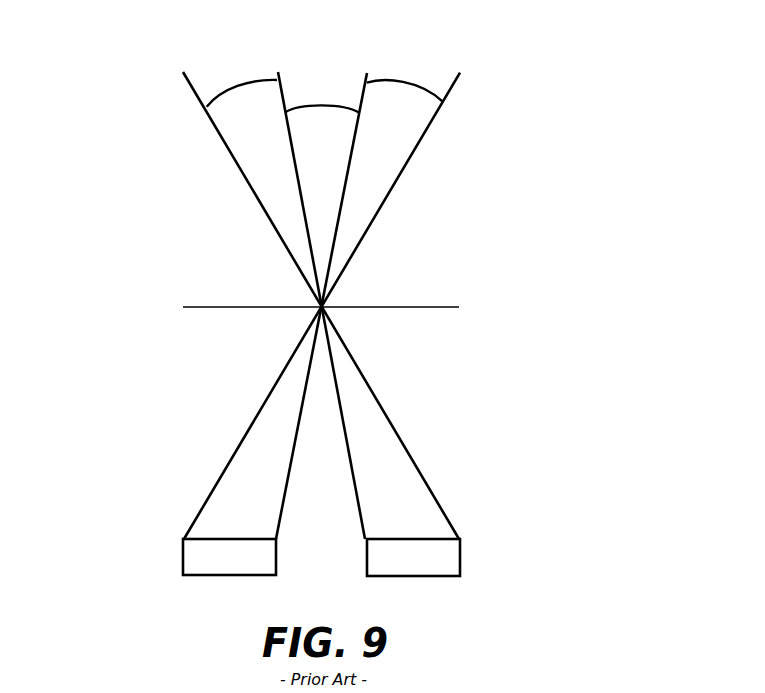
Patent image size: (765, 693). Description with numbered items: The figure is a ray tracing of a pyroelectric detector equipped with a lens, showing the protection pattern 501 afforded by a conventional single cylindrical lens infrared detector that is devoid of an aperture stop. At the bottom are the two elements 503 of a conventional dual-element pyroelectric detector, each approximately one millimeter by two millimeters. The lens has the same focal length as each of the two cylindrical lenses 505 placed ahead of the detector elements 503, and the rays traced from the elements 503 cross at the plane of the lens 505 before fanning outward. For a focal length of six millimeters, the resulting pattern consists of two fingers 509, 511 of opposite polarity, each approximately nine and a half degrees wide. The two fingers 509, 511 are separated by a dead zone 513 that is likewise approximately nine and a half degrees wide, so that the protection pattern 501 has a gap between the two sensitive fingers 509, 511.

The protection pattern 501 is at (147, 45).
The dual-element pyroelectric detector element 503 is at (183, 557).
The cylindrical lens 505 is at (208, 306).
The finger 509 is at (241, 172).
The finger 511 is at (402, 173).
The dead zone 513 is at (338, 148).